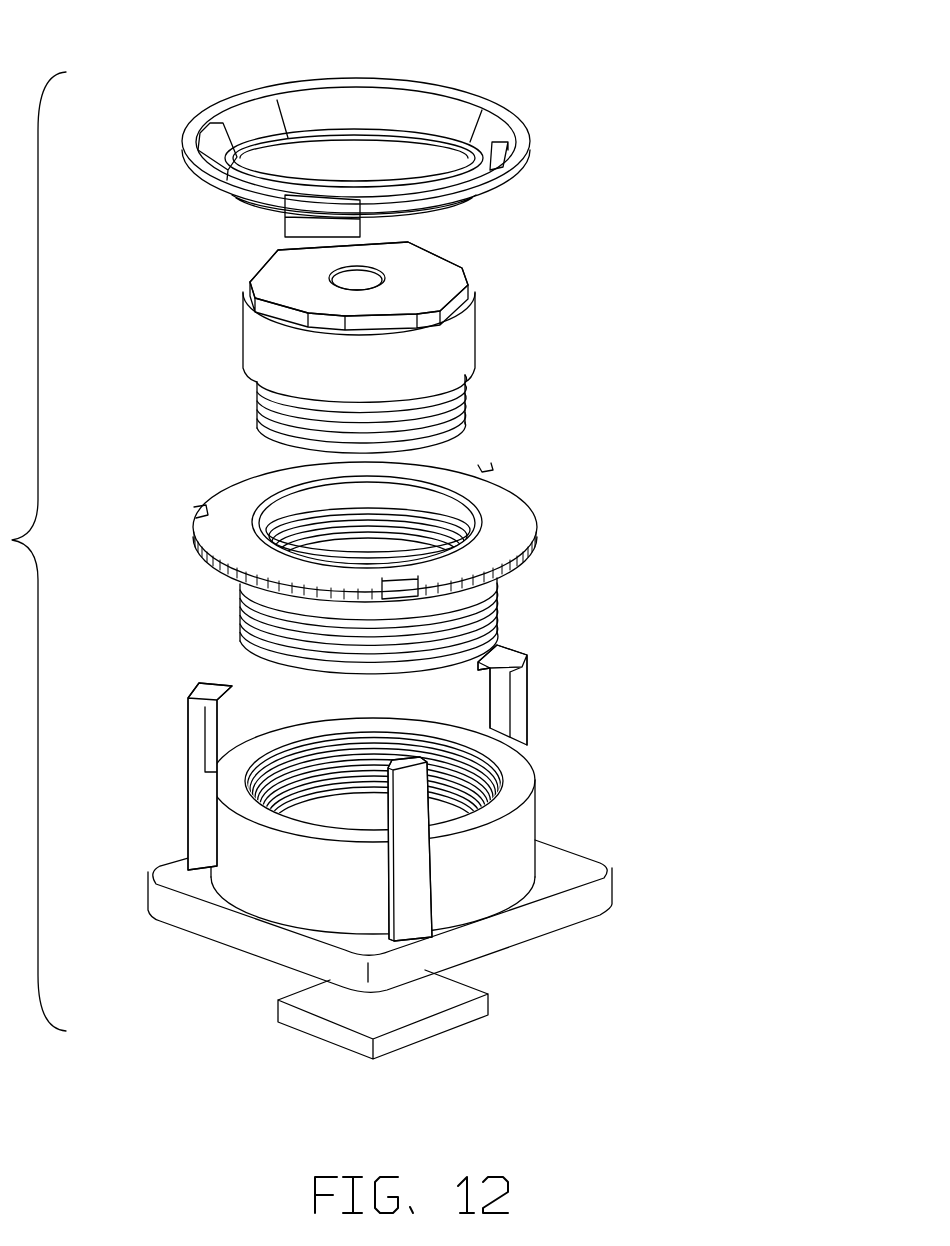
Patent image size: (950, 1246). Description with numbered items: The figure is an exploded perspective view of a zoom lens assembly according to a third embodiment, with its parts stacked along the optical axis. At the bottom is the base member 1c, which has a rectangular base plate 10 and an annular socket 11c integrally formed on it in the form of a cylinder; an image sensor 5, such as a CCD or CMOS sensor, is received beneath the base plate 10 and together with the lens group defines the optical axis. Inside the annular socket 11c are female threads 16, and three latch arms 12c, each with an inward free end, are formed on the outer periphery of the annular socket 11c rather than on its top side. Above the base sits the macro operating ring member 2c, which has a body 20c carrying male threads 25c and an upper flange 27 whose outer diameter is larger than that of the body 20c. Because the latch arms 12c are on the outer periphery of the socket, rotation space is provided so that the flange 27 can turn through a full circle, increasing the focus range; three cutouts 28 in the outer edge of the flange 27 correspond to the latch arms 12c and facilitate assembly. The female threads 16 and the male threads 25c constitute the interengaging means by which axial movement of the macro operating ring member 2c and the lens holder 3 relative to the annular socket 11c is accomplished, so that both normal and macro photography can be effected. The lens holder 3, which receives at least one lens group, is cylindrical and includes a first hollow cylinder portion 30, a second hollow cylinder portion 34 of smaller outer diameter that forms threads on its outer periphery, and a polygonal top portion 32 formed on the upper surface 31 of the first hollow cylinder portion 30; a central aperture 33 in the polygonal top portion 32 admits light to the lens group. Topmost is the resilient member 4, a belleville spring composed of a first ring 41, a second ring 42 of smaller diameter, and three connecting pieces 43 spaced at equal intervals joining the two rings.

The resilient member 4 is at (378, 122).
The first ring 41 is at (362, 88).
The second ring 42 is at (450, 213).
The connecting pieces 43 is at (258, 118).
The lens holder 3 is at (356, 340).
The first hollow cylinder portion 30 is at (430, 355).
The upper surface 31 is at (458, 300).
The polygonal top portion 32 is at (425, 277).
The central aperture 33 is at (352, 274).
The second hollow cylinder portion 34 is at (430, 412).
The macro operating ring member 2c is at (378, 568).
The upper flange 27 is at (222, 548).
The cutouts 28 is at (210, 512).
The body 20c is at (369, 626).
The male threads 25c is at (468, 634).
The base member 1c is at (420, 826).
The base plate 10 is at (556, 873).
The annular socket 11c is at (420, 862).
The latch arms 12c is at (520, 690).
The female threads 16 is at (480, 772).
The image sensor 5 is at (435, 1023).